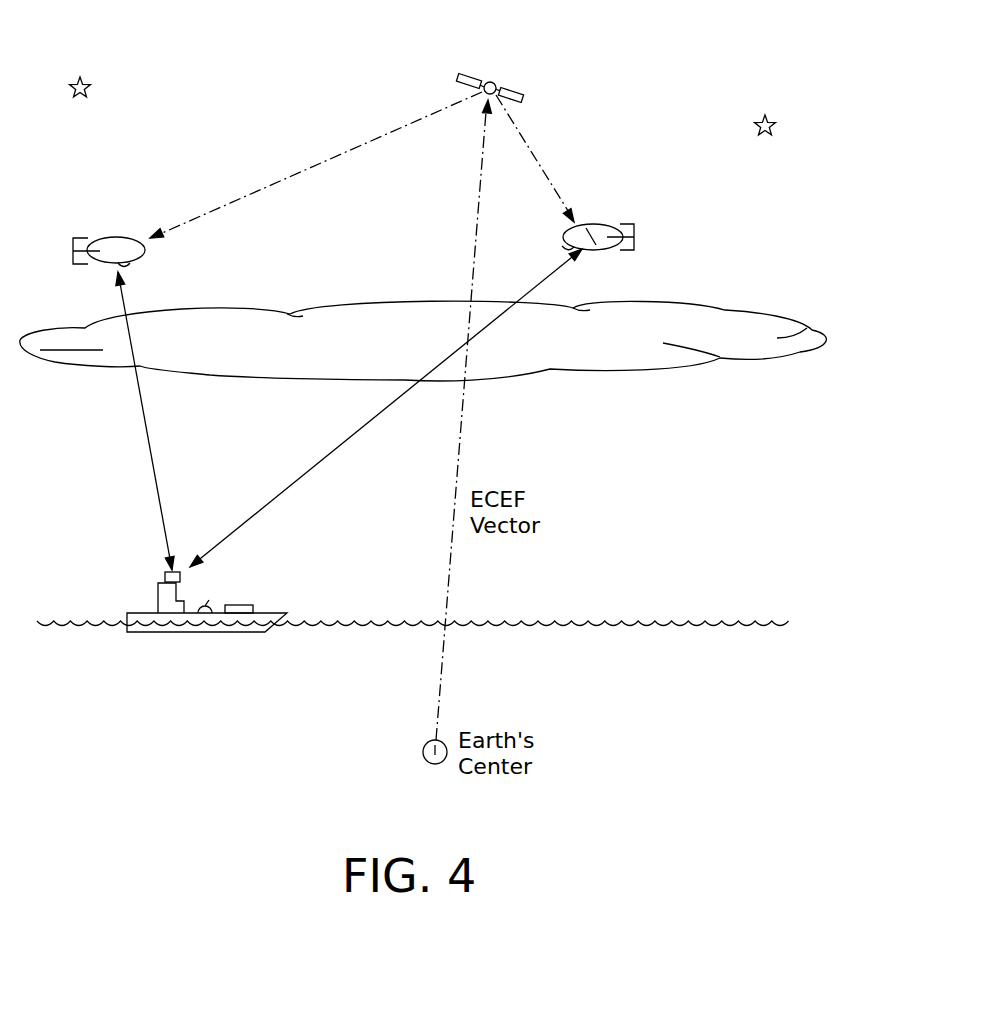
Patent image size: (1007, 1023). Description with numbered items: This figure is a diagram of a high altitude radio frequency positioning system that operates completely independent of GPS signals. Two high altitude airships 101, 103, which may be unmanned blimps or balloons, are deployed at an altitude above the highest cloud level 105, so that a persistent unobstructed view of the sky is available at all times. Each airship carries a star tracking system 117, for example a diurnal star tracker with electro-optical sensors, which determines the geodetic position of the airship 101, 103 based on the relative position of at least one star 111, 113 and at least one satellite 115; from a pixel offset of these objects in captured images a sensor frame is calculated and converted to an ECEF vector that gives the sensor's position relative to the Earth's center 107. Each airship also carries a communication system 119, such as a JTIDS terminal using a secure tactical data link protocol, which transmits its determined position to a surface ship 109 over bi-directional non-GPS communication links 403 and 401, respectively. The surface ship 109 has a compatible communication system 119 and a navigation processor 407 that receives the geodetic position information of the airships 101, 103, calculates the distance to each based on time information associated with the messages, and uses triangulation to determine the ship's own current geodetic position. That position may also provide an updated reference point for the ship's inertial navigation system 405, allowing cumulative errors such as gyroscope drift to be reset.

The high altitude airship 101 is at (121, 237).
The high altitude airship 103 is at (596, 225).
The cloud level 105 is at (746, 358).
The Earth's center 107 is at (424, 752).
The surface ship 109 is at (158, 607).
The star 111 is at (87, 78).
The star 113 is at (771, 116).
The satellite 115 is at (511, 92).
The star tracking system 117 is at (98, 247).
The communication system 119 is at (100, 259).
The non-GPS communication link 401 is at (355, 432).
The non-GPS communication link 403 is at (143, 415).
The inertial navigation system 405 is at (566, 245).
The navigation processor 407 is at (173, 605).